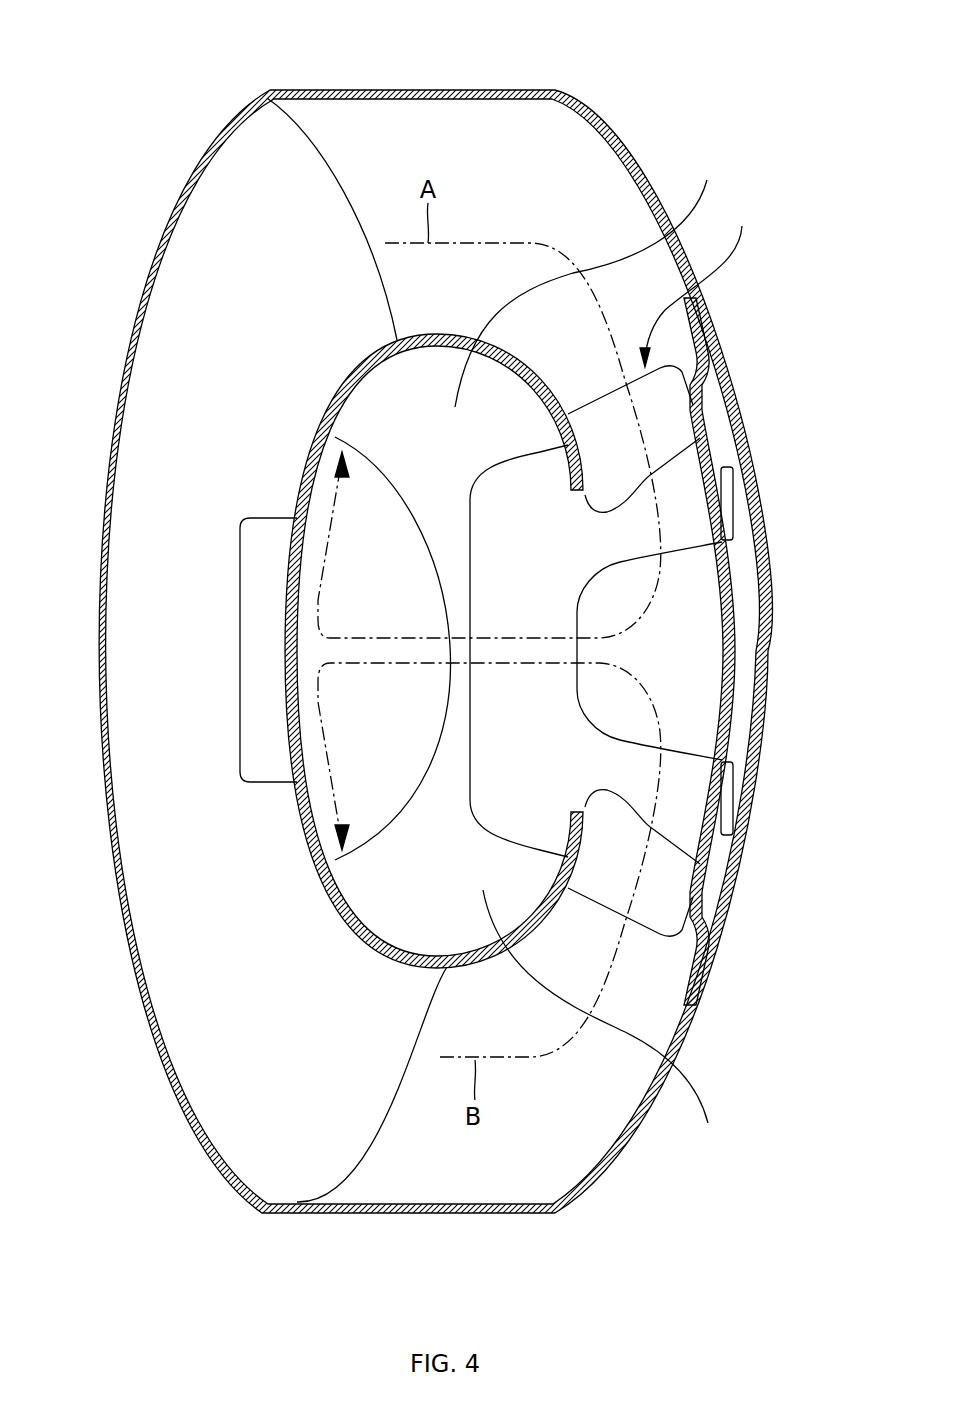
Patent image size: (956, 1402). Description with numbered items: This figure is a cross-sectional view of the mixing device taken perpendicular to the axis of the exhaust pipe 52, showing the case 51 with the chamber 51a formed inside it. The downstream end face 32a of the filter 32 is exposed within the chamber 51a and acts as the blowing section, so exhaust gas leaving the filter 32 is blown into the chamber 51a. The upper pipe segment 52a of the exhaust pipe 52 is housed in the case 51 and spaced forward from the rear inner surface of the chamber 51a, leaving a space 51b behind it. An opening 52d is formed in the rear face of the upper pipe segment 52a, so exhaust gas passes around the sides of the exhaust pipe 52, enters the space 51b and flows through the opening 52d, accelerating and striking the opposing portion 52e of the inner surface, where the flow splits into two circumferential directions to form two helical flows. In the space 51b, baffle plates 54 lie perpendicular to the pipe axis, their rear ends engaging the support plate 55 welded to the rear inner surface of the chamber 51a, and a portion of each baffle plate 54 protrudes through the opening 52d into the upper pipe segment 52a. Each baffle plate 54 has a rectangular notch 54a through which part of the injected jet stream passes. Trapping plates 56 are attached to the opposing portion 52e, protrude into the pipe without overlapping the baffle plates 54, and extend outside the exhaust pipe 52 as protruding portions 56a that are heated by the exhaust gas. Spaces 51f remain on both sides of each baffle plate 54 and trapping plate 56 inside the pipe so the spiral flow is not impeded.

The case 51 is at (562, 88).
The chamber 51a is at (605, 200).
The space 51f is at (592, 650).
The space 51b is at (698, 284).
The filter 32 is at (170, 330).
The downstream end face 32a is at (210, 227).
The exhaust pipe 52 is at (370, 940).
The upper pipe segment 52a is at (480, 968).
The opening 52d is at (700, 438).
The opposing portion 52e is at (290, 723).
The baffle plate 54 is at (665, 912).
The notch 54a is at (690, 712).
The support plate 55 is at (745, 618).
The trapping plate 56 is at (387, 793).
The protruding portion 56a is at (250, 630).